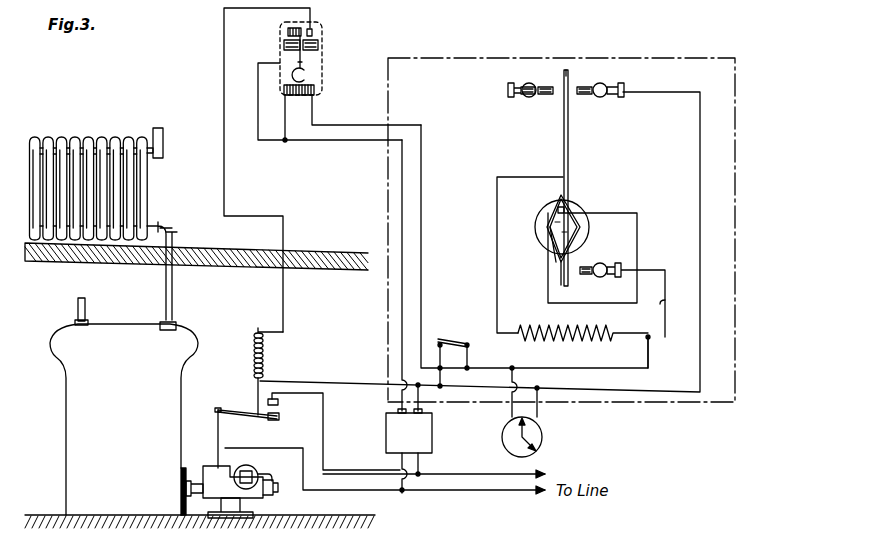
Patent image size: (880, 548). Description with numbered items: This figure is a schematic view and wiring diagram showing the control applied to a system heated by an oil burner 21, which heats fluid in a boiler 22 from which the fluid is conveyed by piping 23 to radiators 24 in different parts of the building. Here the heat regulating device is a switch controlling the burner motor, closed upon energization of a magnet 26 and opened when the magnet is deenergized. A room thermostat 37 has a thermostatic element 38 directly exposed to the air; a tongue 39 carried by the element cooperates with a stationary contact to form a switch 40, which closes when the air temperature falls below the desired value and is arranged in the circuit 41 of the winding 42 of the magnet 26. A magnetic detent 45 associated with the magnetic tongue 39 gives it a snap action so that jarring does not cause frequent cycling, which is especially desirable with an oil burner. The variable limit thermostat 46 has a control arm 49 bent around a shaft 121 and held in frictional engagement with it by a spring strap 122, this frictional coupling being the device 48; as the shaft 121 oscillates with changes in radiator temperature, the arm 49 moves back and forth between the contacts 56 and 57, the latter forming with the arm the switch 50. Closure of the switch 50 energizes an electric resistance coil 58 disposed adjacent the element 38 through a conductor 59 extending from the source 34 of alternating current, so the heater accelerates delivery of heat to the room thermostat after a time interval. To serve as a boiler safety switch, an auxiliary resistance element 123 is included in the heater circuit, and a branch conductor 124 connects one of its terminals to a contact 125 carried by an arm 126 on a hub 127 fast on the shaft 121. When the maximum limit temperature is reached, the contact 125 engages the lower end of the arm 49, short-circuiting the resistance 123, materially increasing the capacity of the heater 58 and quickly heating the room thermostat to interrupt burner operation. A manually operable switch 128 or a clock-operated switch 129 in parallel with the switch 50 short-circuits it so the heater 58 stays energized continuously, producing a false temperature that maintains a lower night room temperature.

The oil burner 21 is at (208, 456).
The boiler 22 is at (72, 419).
The piping 23 is at (173, 293).
The radiators 24 is at (100, 140).
The magnet 26 is at (268, 370).
The source of alternating current 34 is at (420, 425).
The thermostat 37 is at (332, 73).
The thermostatic element 38 is at (310, 77).
The tongue 39 is at (305, 64).
The switch 40 is at (310, 28).
The circuit 41 is at (226, 178).
The winding 42 is at (254, 338).
The magnetic detent 45 is at (285, 45).
The thermostat 46 is at (165, 136).
The device 48 is at (567, 233).
The control member 49 is at (570, 140).
The switch 50 is at (578, 88).
The stationary stop 56 is at (545, 80).
The stationary stop 57 is at (624, 86).
The electric resistance coil 58 is at (306, 96).
The conductor 59 is at (700, 358).
The shaft 121 is at (570, 222).
The spring strap 122 is at (552, 244).
The auxiliary resistance element 123 is at (588, 326).
The branch conductor 124 is at (665, 300).
The contact 125 is at (588, 262).
The arm 126 is at (548, 293).
The hub 127 is at (540, 215).
The manually operable switch 128 is at (458, 338).
The clock-operated switch 129 is at (543, 434).